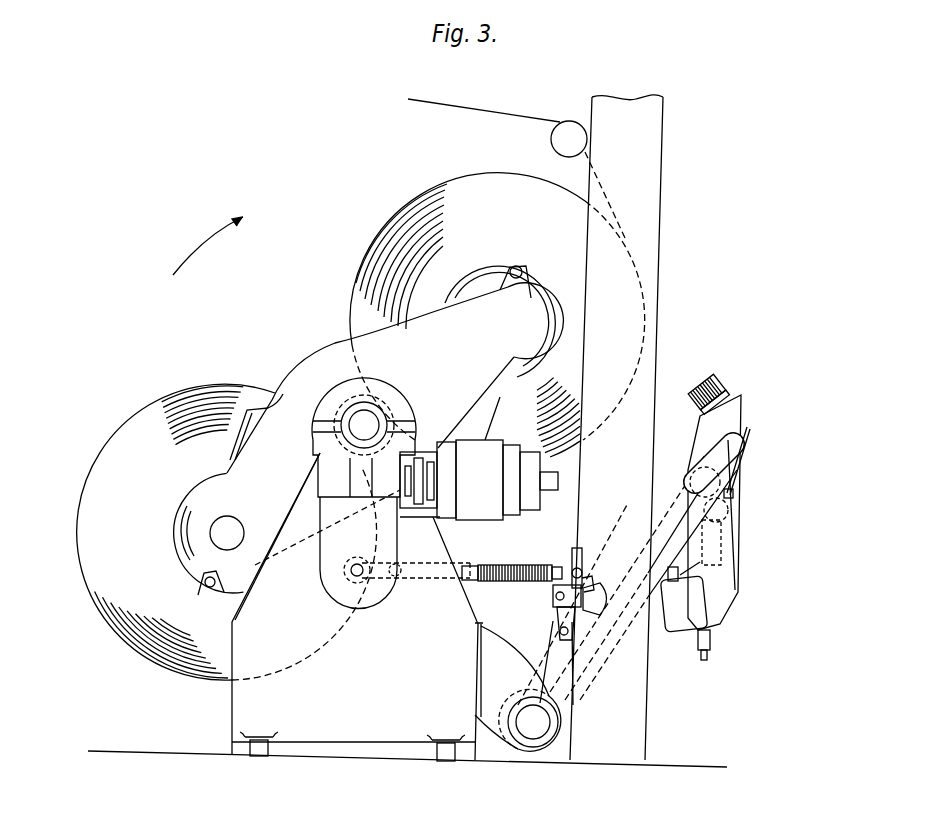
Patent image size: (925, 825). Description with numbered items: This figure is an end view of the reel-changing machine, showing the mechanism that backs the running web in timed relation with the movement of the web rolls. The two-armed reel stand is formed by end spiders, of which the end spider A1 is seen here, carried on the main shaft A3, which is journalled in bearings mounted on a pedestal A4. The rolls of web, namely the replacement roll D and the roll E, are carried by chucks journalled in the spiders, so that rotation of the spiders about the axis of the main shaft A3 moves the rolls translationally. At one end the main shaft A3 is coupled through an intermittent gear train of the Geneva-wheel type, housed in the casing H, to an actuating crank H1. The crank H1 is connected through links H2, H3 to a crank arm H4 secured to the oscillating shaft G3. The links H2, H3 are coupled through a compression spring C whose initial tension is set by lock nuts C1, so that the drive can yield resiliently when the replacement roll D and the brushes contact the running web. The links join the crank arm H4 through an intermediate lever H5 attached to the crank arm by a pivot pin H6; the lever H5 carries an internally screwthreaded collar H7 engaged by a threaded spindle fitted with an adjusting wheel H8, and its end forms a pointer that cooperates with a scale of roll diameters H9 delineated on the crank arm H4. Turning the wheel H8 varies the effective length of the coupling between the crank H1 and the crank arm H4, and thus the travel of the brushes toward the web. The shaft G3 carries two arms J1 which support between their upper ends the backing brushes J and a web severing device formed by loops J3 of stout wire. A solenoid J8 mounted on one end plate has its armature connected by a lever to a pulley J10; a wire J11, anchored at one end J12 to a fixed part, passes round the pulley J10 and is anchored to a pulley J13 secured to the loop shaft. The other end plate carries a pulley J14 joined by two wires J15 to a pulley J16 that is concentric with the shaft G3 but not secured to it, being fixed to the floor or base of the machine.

The roll of web E is at (478, 195).
The replacement roll D is at (217, 407).
The end spider A1 is at (415, 335).
The main shaft A3 is at (366, 427).
The pedestal A4 is at (357, 607).
The casing H is at (332, 565).
The actuating crank H1 is at (357, 590).
The link H2 is at (432, 580).
The lock nuts C1 is at (478, 566).
The compression spring C is at (506, 565).
The link H3 is at (574, 569).
The intermediate lever H5 is at (576, 548).
The collar H7 is at (590, 578).
The pivot pin H6 is at (553, 598).
The scale of roll diameters H9 is at (558, 622).
The adjusting wheel H8 is at (608, 600).
The crank arm H4 is at (553, 665).
The oscillating shaft G3 is at (540, 725).
The pulley J16 is at (532, 746).
The wires J15 is at (548, 655).
The pulley J14 is at (690, 478).
The backing brushes J is at (702, 378).
The arms J1 is at (722, 458).
The loops of stout wire J3 is at (748, 428).
The anchored end J12 is at (734, 493).
The pulley J13 is at (728, 519).
The wire J11 is at (722, 545).
The pulley J10 is at (736, 578).
The solenoid J8 is at (693, 618).